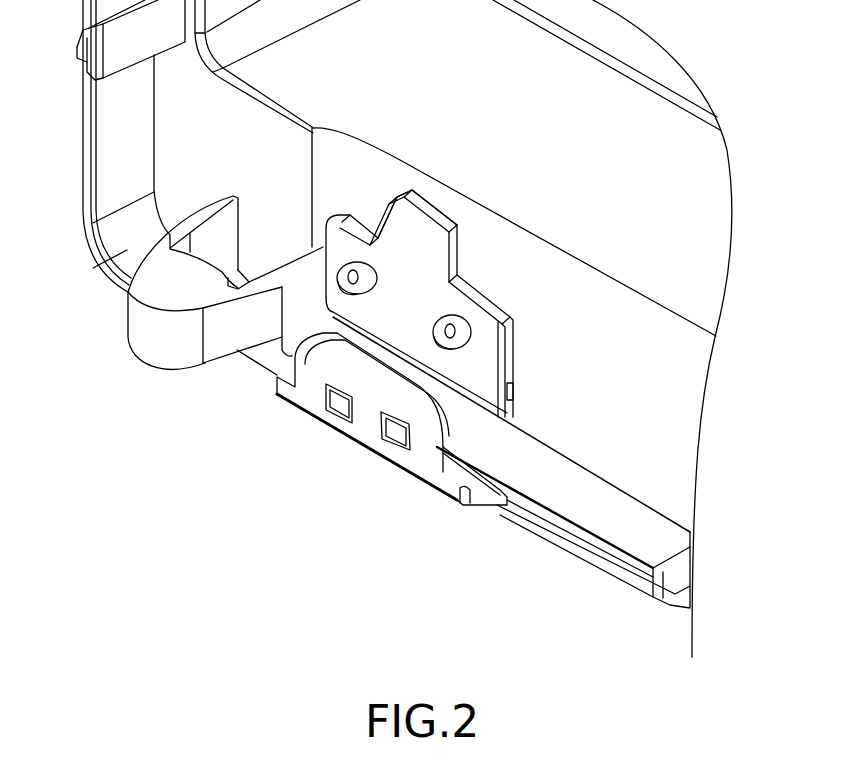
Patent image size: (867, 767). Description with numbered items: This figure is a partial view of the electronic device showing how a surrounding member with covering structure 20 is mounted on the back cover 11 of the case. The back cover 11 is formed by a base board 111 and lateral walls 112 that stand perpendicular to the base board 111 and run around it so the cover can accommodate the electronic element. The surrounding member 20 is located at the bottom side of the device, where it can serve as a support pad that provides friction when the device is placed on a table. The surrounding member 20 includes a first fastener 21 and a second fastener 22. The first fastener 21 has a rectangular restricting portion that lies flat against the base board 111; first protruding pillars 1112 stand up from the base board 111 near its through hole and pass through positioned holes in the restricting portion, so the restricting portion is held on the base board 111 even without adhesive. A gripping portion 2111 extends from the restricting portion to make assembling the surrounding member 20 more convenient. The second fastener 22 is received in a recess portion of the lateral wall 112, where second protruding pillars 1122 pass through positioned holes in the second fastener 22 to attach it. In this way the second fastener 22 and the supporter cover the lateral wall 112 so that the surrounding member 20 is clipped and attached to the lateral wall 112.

The back cover 11 is at (531, 648).
The base board 111 is at (542, 412).
The lateral wall 112 is at (563, 497).
The first protruding pillar 1112 is at (356, 270).
The second protruding pillar 1122 is at (343, 389).
The surrounding member with covering structure 20 is at (281, 414).
The first fastener 21 is at (512, 320).
The gripping portion 2111 is at (418, 236).
The second fastener 22 is at (373, 390).